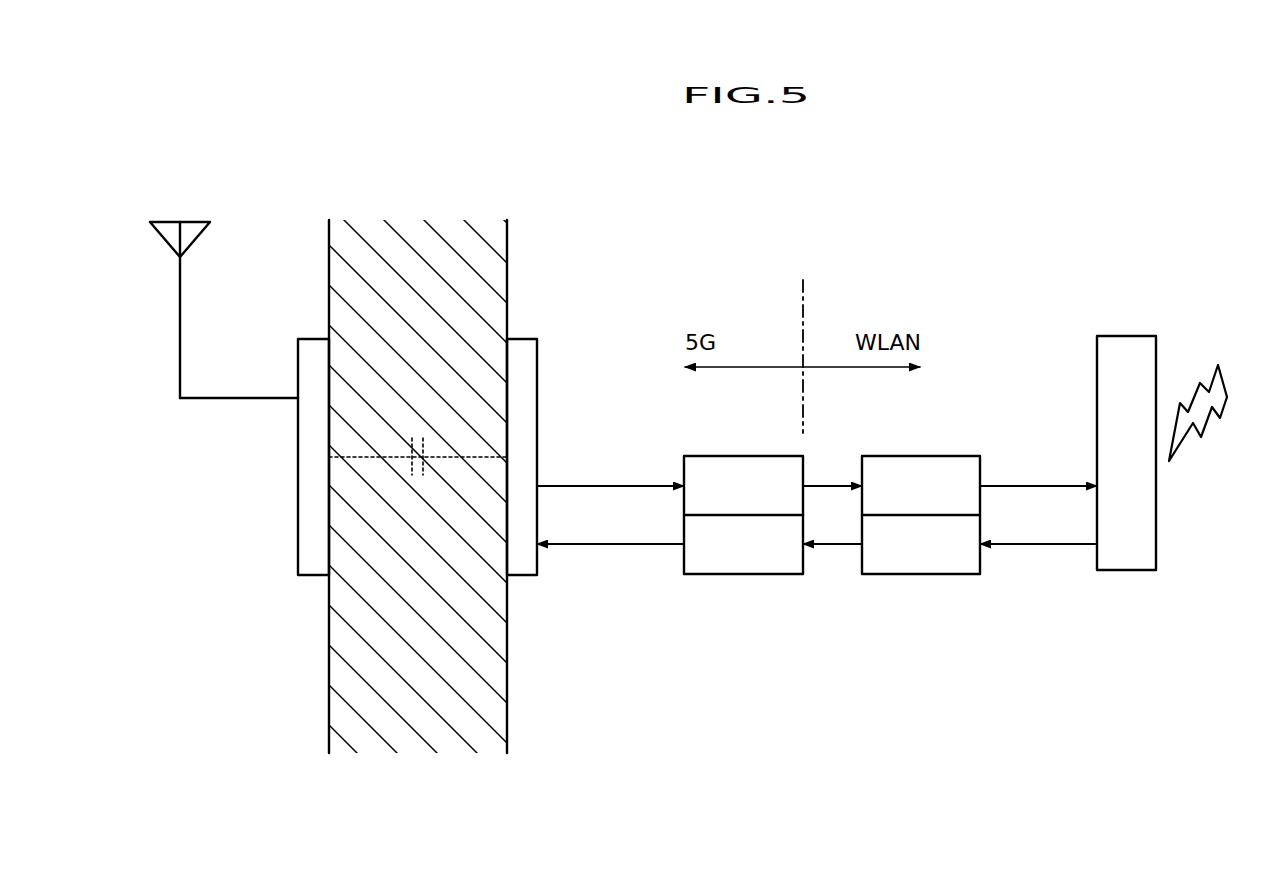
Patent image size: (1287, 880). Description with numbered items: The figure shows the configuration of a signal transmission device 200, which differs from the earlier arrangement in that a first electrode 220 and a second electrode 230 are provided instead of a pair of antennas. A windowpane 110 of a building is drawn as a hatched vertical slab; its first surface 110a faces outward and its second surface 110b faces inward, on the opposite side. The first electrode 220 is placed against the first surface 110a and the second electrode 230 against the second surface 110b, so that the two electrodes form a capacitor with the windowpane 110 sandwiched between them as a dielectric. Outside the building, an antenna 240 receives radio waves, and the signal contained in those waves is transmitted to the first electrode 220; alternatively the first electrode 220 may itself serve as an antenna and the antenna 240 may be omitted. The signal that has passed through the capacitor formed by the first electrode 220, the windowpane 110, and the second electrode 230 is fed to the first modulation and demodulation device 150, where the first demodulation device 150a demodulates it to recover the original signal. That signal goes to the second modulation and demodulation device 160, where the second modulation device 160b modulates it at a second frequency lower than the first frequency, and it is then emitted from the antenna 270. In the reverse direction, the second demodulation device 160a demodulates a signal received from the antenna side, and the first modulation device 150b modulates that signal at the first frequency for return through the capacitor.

The signal transmission device 200 is at (1148, 167).
The windowpane 110 is at (423, 461).
The first surface 110a is at (328, 243).
The second surface 110b is at (507, 243).
The first electrode 220 is at (308, 523).
The second electrode 230 is at (527, 367).
The antenna 240 is at (162, 223).
The first modulation and demodulation device 150 is at (710, 510).
The first demodulation device 150a is at (757, 465).
The first modulation device 150b is at (742, 565).
The second modulation and demodulation device 160 is at (940, 508).
The second demodulation device 160a is at (895, 565).
The second modulation device 160b is at (883, 463).
The antenna 270 is at (1119, 343).